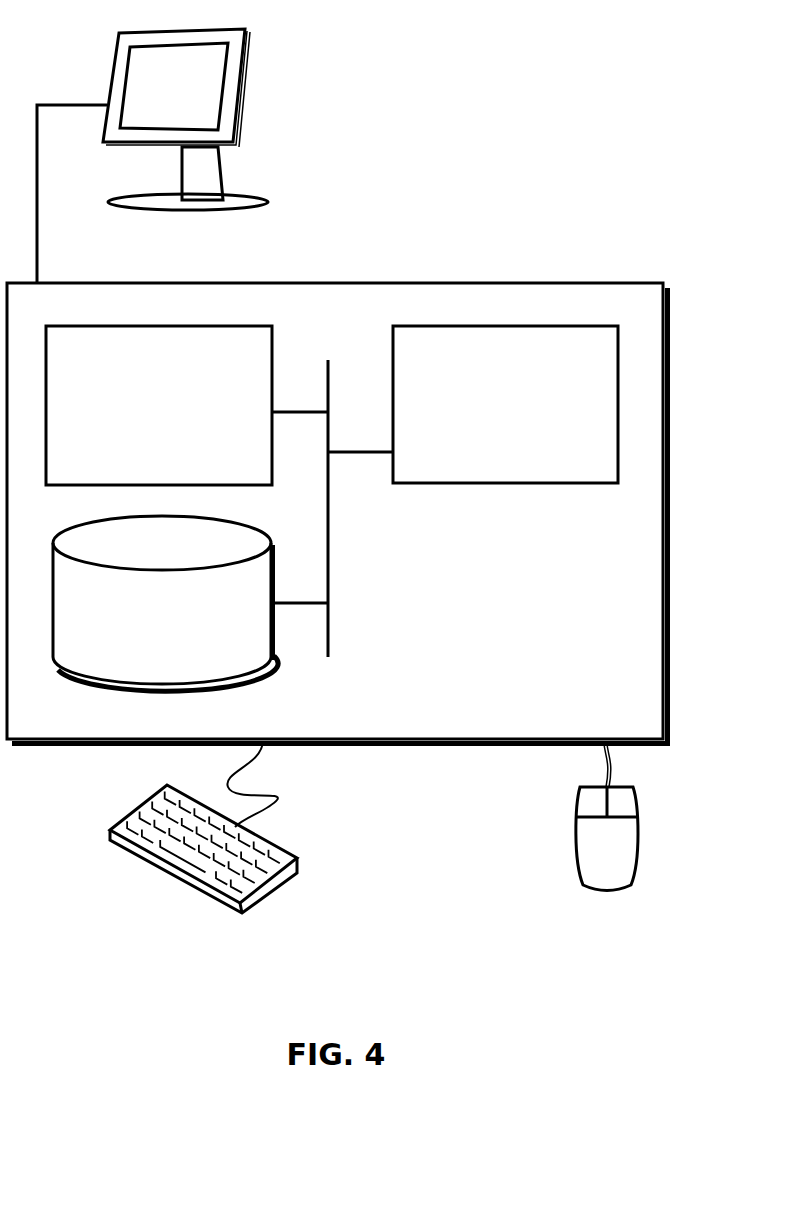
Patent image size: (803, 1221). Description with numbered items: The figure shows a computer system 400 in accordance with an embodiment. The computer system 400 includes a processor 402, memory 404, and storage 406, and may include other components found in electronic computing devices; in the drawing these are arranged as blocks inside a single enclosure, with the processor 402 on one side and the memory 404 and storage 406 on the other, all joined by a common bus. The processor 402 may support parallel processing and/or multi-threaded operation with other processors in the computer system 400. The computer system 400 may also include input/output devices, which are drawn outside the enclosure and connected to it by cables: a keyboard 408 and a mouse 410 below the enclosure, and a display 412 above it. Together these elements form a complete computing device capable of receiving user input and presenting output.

The computer system 400 is at (382, 263).
The processor 402 is at (505, 404).
The memory 404 is at (159, 405).
The storage 406 is at (165, 603).
The keyboard 408 is at (130, 852).
The mouse 410 is at (607, 816).
The display 412 is at (152, 156).